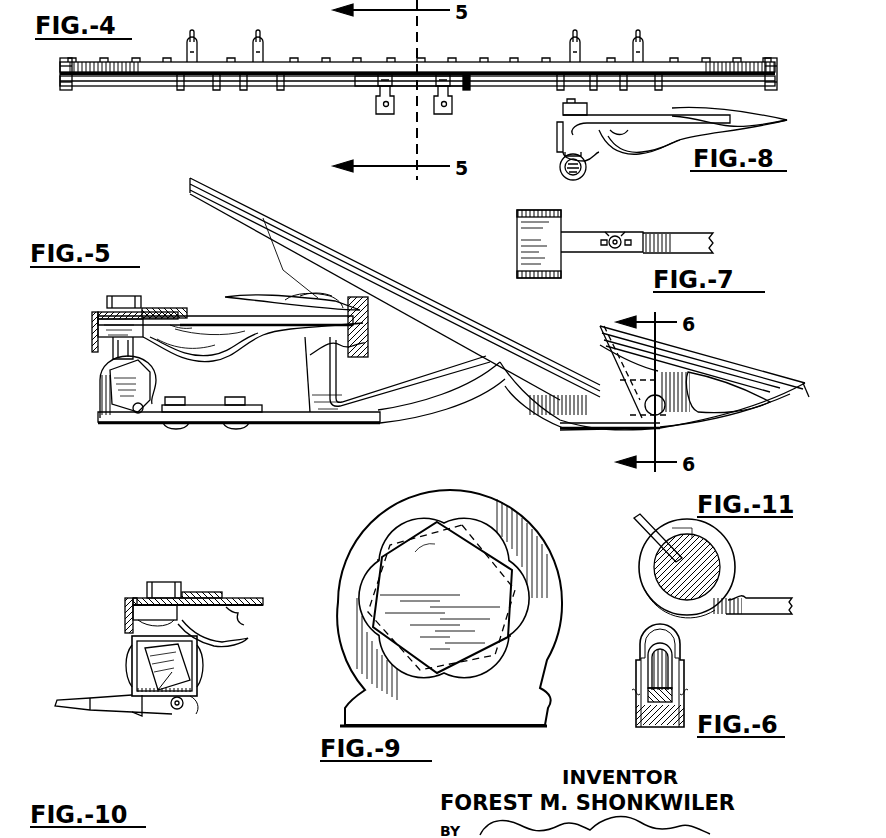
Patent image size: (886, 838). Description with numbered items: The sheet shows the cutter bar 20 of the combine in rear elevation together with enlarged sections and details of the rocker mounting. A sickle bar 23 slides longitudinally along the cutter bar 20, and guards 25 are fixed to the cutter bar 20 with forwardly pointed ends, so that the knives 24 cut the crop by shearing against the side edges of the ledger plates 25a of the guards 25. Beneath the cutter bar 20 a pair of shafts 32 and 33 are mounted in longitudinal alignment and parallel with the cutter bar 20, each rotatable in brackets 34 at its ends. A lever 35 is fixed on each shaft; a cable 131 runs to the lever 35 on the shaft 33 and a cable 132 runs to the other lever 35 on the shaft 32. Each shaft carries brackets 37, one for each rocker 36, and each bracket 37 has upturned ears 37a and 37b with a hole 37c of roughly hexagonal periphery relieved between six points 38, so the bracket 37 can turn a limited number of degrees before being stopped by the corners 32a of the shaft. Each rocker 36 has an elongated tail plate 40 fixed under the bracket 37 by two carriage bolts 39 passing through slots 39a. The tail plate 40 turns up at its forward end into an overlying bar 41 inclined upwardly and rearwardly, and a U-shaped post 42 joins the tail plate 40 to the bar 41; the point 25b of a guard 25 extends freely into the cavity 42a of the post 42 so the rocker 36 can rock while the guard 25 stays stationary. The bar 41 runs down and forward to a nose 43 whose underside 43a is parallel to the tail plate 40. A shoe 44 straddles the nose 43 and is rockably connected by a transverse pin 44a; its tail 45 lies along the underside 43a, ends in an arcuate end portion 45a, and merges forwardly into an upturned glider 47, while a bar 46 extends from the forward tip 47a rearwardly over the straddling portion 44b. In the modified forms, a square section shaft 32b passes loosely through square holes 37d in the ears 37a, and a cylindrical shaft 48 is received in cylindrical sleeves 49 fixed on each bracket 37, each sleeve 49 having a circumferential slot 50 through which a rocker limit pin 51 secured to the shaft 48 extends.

In FIG. 4, the cutter bar 20 is at (203, 70).
In FIG. 8, the cutter bar 20 is at (557, 135).
In FIG. 5, the cutter bar 20 is at (92, 333).
In FIG. 10, the cutter bar 20 is at (125, 614).
In FIG. 5, the sickle bar 23 is at (170, 307).
In FIG. 10, the sickle bar 23 is at (226, 594).
In FIG. 8, the knives 24 is at (662, 126).
In FIG. 5, the knives 24 is at (212, 316).
In FIG. 10, the knives 24 is at (262, 600).
In FIG. 8, the guards 25 is at (748, 122).
In FIG. 5, the guards 25 is at (281, 303).
In FIG. 10, the guards 25 is at (237, 626).
In FIG. 5, the ledger plates 25a is at (233, 332).
In FIG. 5, the point of guard 25b is at (322, 301).
In FIG. 4, the shaft 32 is at (312, 87).
In FIG. 8, the shaft 32 is at (560, 166).
In FIG. 5, the shaft 32 is at (112, 384).
In FIG. 9, the shaft 32 is at (448, 575).
In FIG. 9, the corners of shaft 32a is at (374, 626).
In FIG. 10, the square section shaft 32b is at (176, 657).
In FIG. 4, the shaft 33 is at (510, 88).
In FIG. 4, the brackets 34 is at (66, 88).
In FIG. 8, the brackets 34 is at (586, 166).
In FIG. 5, the brackets 34 is at (113, 347).
In FIG. 10, the brackets 34 is at (133, 598).
In FIG. 4, the lever 35 is at (382, 78).
In FIG. 5, the lever 35 is at (134, 412).
In FIG. 10, the lever 35 is at (196, 706).
In FIG. 5, the rockers 36 is at (340, 247).
In FIG. 5, the brackets 37 is at (203, 402).
In FIG. 7, the brackets 37 is at (510, 232).
In FIG. 9, the brackets 37 is at (425, 703).
In FIG. 11, the brackets 37 is at (757, 608).
In FIG. 10, the brackets 37 is at (197, 686).
In FIG. 4, the ear 37a is at (180, 88).
In FIG. 5, the ear 37a is at (100, 379).
In FIG. 7, the ear 37a is at (535, 278).
In FIG. 9, the ear 37a is at (452, 510).
In FIG. 10, the ear 37a is at (131, 665).
In FIG. 4, the ear 37b is at (216, 88).
In FIG. 7, the ear 37b is at (541, 210).
In FIG. 9, the hole 37c is at (408, 531).
In FIG. 10, the square holes 37d is at (170, 688).
In FIG. 9, the points 38 is at (380, 558).
In FIG. 5, the carriage bolts 39 is at (178, 428).
In FIG. 7, the carriage bolts 39 is at (612, 237).
In FIG. 7, the slots 39a is at (626, 246).
In FIG. 5, the tail plate 40 is at (318, 421).
In FIG. 7, the tail plate 40 is at (675, 240).
In FIG. 5, the bar 41 is at (222, 196).
In FIG. 5, the post 42 is at (343, 380).
In FIG. 5, the cavity 42a is at (352, 343).
In FIG. 5, the nose 43 is at (624, 402).
In FIG. 6, the nose 43 is at (662, 663).
In FIG. 5, the underside of nose 43a is at (590, 421).
In FIG. 5, the shoe 44 is at (770, 368).
In FIG. 6, the shoe 44 is at (680, 632).
In FIG. 5, the pin 44a is at (690, 405).
In FIG. 6, the pin 44a is at (672, 692).
In FIG. 5, the straddling portion 44b is at (625, 352).
In FIG. 5, the tail 45 is at (615, 428).
In FIG. 5, the arcuate end portion 45a is at (505, 400).
In FIG. 5, the bar 46 is at (735, 370).
In FIG. 5, the glider 47 is at (766, 404).
In FIG. 5, the forward tip 47a is at (807, 398).
In FIG. 11, the cylindrical shaft 48 is at (722, 567).
In FIG. 11, the cylindrical sleeves 49 is at (662, 604).
In FIG. 11, the circumferential slot 50 is at (672, 530).
In FIG. 11, the rocker limit pin 51 is at (636, 520).
In FIG. 4, the cable 131 is at (383, 114).
In FIG. 10, the cable 131 is at (72, 706).
In FIG. 4, the cable 132 is at (444, 114).